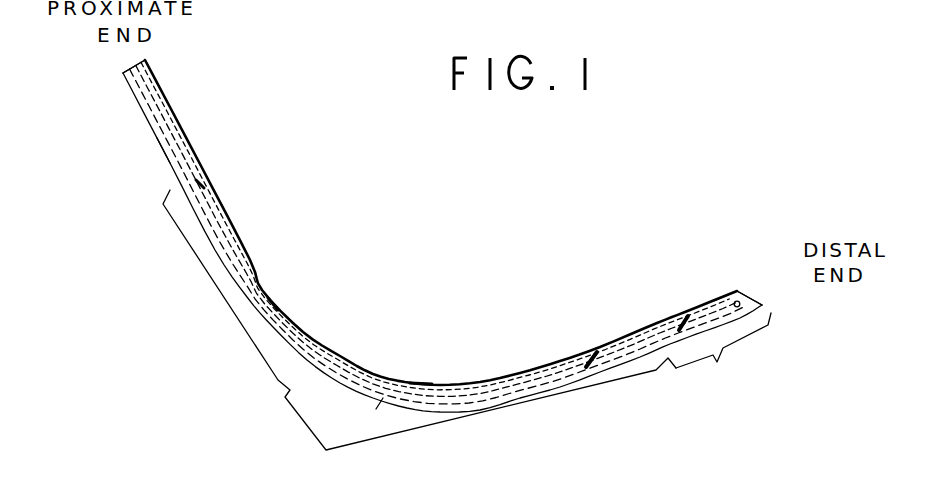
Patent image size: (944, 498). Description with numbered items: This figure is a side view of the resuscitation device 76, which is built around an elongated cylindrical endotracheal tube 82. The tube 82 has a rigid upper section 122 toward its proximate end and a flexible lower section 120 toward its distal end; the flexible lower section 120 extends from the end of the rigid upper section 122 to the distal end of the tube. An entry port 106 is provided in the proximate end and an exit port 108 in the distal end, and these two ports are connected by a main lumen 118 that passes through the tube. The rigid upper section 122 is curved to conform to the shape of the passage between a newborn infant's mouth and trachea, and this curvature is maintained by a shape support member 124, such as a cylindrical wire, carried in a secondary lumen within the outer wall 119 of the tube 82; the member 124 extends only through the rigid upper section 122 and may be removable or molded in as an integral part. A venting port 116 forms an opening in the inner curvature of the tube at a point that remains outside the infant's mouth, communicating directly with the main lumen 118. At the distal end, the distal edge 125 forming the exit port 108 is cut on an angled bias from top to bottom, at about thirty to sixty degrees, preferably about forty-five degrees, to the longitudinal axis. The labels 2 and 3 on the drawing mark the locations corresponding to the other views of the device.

The resuscitation device 76 is at (440, 228).
The endotracheal tube 82 is at (116, 162).
The entry port 106 is at (147, 60).
The exit port 108 is at (762, 297).
The venting port 116 is at (273, 307).
The main lumen 118 is at (354, 418).
The outer wall 119 is at (447, 343).
The flexible lower section 120 is at (723, 350).
The rigid upper section 122 is at (419, 320).
The shape support member 124 is at (236, 167).
The distal edge 125 is at (735, 290).
The electrode contacts 2 is at (652, 308).
The section line 3- 3 is at (519, 381).